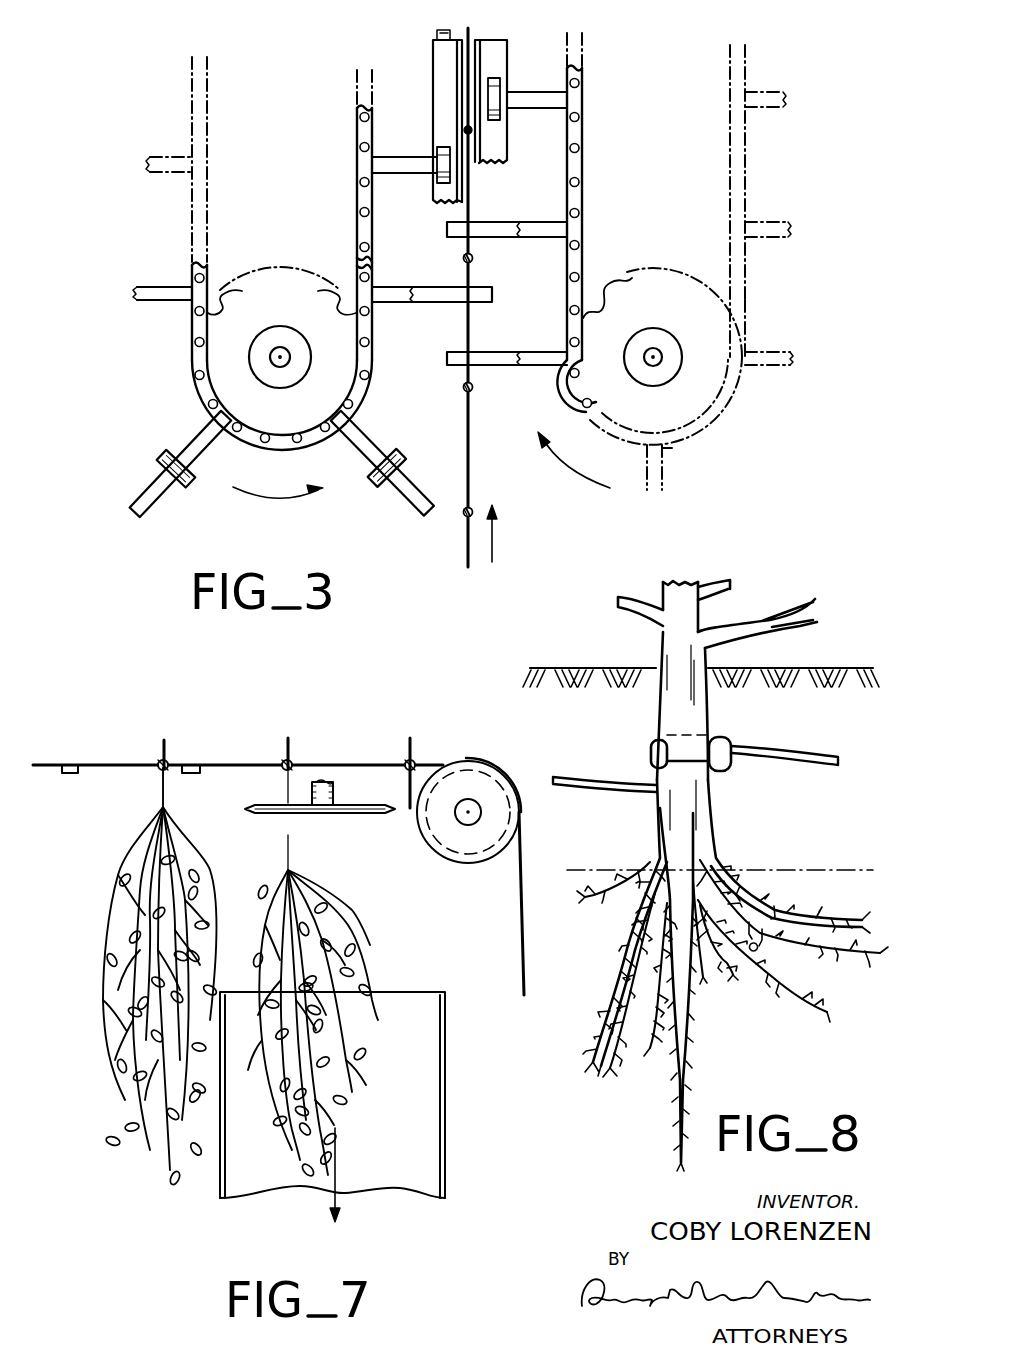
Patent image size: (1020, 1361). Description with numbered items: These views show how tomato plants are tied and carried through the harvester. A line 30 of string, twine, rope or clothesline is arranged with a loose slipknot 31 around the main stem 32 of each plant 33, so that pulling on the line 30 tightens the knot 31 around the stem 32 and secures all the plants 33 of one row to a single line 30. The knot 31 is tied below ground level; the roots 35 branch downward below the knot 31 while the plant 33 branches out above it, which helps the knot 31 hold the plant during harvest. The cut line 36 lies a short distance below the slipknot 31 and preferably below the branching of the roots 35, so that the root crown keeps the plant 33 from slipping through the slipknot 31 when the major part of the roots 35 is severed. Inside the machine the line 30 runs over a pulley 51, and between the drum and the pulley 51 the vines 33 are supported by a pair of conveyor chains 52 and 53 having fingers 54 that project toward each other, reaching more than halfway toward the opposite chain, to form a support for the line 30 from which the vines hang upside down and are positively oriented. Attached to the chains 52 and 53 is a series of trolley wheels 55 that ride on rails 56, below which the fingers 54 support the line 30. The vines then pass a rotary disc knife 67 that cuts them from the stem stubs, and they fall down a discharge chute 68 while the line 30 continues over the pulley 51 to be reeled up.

In FIG. 3, the line 30 is at (465, 547).
In FIG. 7, the line 30 is at (99, 762).
In FIG. 8, the line 30 is at (803, 762).
In FIG. 3, the slipknot 31 is at (474, 259).
In FIG. 7, the slipknot 31 is at (158, 762).
In FIG. 8, the slipknot 31 is at (652, 750).
In FIG. 3, the stem 32 is at (463, 258).
In FIG. 7, the stem 32 is at (168, 751).
In FIG. 8, the stem 32 is at (680, 707).
In FIG. 7, the plant 33 is at (123, 898).
In FIG. 8, the plant 33 is at (636, 596).
In FIG. 8, the roots 35 is at (780, 963).
In FIG. 8, the cut line 36 is at (750, 868).
In FIG. 7, the pulley 51 is at (483, 762).
In FIG. 3, the conveyor chain 52 is at (582, 194).
In FIG. 3, the conveyor chain 53 is at (357, 206).
In FIG. 3, the fingers 54 is at (449, 302).
In FIG. 7, the fingers 54 is at (72, 774).
In FIG. 3, the trolley wheels 55 is at (438, 146).
In FIG. 3, the rails 56 is at (443, 82).
In FIG. 7, the rotary disc knife 67 is at (358, 813).
In FIG. 7, the discharge chute 68 is at (430, 1125).